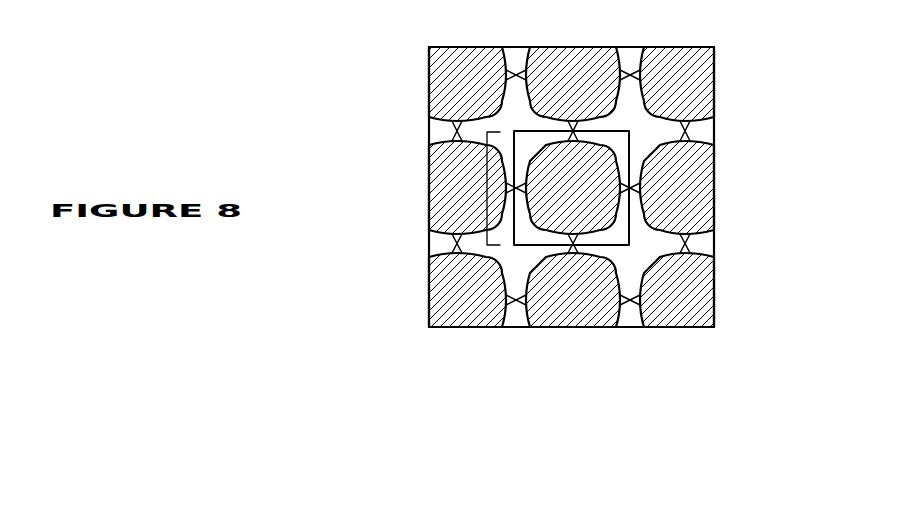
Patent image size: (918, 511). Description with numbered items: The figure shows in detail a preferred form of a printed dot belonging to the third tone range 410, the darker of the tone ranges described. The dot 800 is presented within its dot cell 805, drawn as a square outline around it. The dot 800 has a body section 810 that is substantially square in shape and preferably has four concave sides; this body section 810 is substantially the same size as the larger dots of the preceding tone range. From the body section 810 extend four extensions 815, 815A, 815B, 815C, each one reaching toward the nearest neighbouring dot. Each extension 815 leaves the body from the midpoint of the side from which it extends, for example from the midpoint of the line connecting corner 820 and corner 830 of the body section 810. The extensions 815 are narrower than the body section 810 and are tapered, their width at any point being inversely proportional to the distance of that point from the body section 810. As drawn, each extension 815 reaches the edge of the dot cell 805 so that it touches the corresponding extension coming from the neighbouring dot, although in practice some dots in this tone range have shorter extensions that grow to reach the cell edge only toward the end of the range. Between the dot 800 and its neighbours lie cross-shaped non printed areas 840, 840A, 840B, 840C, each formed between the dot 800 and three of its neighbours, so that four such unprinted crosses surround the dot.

The third tone range 410 is at (687, 58).
The dot 800 is at (487, 191).
The dot cell 805 is at (633, 238).
The body section 810 is at (598, 177).
The extension 815 is at (625, 193).
The extension 815A is at (561, 128).
The extension 815B is at (517, 190).
The extension 815C is at (572, 245).
The corner 820 is at (630, 92).
The corner 830 is at (635, 287).
The cross-shaped non printed area 840 is at (510, 125).
The cross-shaped non printed area 840A is at (653, 116).
The cross-shaped non printed area 840B is at (612, 229).
The cross-shaped non printed area 840C is at (508, 283).